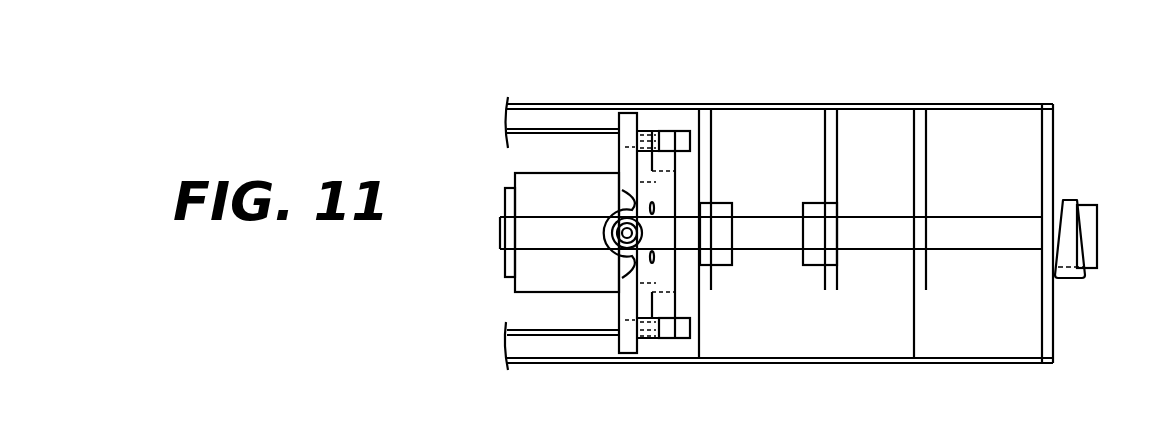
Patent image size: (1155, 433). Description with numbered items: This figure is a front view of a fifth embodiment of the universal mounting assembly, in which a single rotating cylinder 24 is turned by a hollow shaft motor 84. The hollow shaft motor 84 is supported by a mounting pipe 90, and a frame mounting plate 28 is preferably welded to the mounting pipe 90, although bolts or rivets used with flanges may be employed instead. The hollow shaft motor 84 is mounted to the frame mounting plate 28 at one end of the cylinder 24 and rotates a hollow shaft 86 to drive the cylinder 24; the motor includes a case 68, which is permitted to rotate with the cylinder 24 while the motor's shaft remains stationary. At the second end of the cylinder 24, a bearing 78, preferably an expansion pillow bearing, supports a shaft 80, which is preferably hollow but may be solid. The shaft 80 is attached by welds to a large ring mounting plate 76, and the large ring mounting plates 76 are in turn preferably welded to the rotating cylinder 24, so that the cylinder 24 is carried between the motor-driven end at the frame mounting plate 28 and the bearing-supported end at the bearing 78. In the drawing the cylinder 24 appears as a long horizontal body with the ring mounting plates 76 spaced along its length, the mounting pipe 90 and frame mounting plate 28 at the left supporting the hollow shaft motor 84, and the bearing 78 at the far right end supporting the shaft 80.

The rotating cylinder 24 is at (710, 107).
The frame mounting plate 28 is at (630, 110).
The case 68 is at (552, 248).
The large ring mounting plate 76 is at (1037, 123).
The bearing 78 is at (1070, 197).
The shaft 80 is at (960, 220).
The hollow shaft motor 84 is at (567, 183).
The hollow shaft 86 is at (750, 215).
The mounting pipe 90 is at (496, 331).